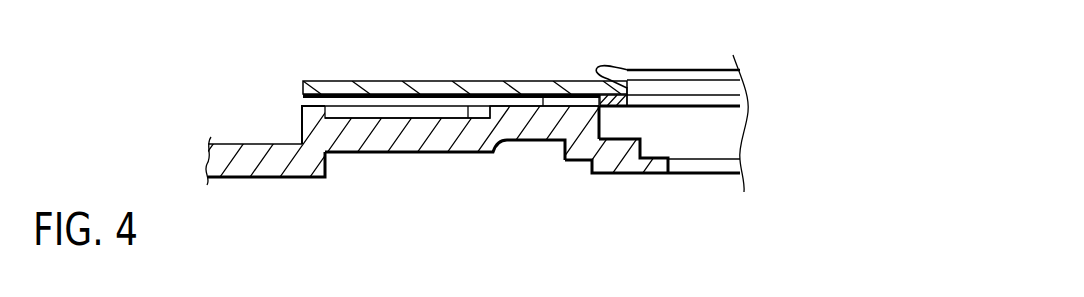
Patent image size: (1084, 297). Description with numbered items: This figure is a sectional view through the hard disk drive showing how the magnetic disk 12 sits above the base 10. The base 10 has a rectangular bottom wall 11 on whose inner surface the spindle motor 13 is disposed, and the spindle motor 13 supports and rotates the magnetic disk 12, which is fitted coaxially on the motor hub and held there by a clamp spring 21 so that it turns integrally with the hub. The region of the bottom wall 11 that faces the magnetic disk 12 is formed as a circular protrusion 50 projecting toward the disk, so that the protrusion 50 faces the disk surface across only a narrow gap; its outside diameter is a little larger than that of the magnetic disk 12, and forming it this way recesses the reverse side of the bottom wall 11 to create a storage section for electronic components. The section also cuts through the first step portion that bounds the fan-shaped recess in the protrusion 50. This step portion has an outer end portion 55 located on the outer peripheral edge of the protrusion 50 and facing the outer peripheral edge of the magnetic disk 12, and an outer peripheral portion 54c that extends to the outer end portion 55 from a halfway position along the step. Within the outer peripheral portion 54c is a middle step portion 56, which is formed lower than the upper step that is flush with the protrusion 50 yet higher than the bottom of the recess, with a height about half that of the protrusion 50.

The base 10 is at (244, 167).
The bottom wall 11 is at (618, 153).
The magnetic disk 12 is at (340, 88).
The spindle motor 13 is at (729, 133).
The clamp spring 21 is at (693, 72).
The protrusion 50 is at (545, 97).
The outer peripheral portion 54c is at (390, 106).
The outer end portion 55 is at (303, 107).
The middle step portion 56 is at (470, 106).